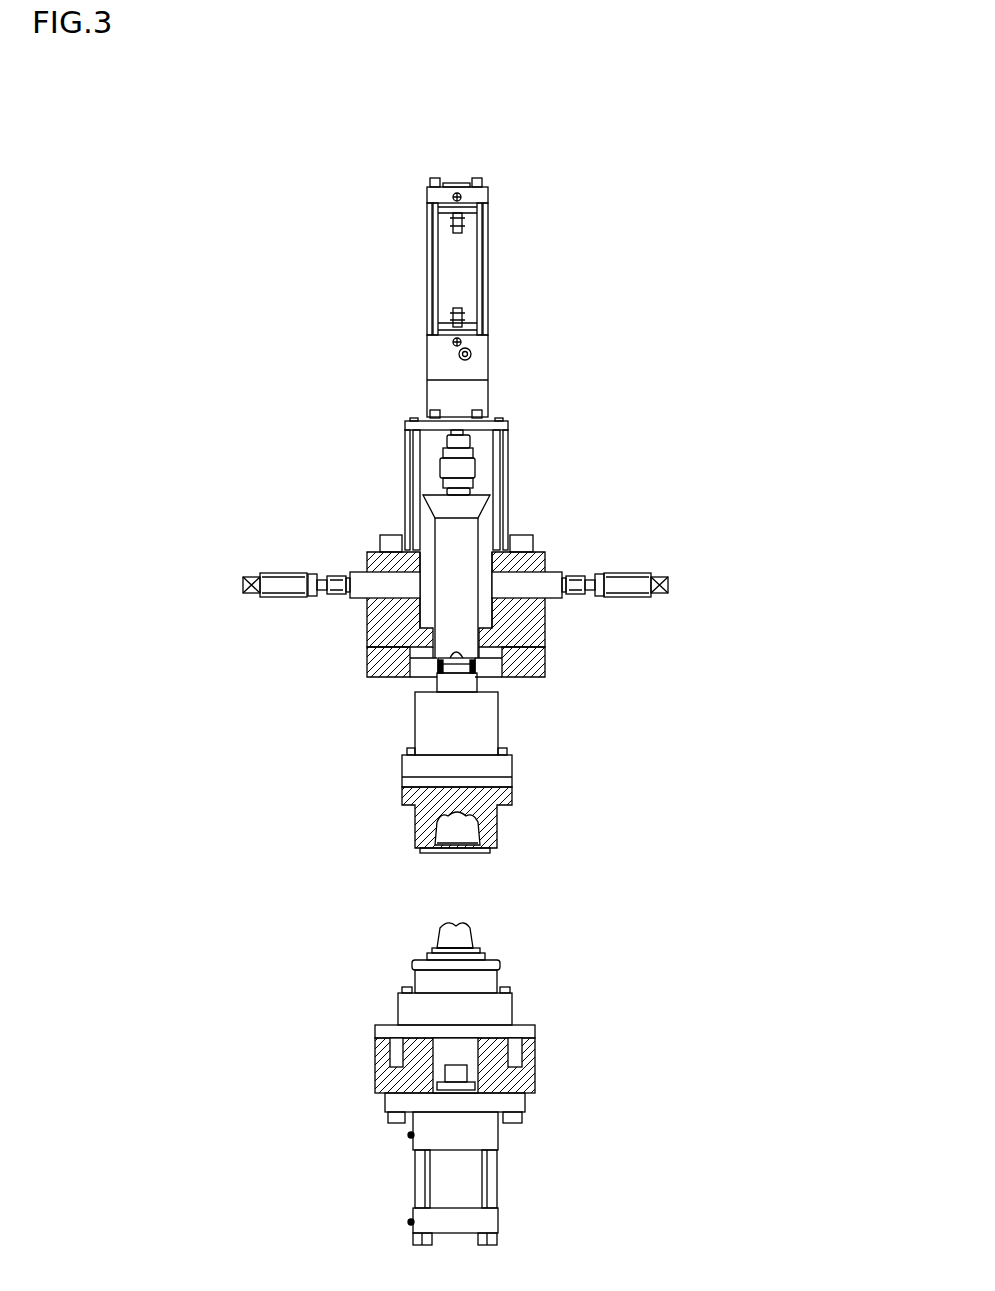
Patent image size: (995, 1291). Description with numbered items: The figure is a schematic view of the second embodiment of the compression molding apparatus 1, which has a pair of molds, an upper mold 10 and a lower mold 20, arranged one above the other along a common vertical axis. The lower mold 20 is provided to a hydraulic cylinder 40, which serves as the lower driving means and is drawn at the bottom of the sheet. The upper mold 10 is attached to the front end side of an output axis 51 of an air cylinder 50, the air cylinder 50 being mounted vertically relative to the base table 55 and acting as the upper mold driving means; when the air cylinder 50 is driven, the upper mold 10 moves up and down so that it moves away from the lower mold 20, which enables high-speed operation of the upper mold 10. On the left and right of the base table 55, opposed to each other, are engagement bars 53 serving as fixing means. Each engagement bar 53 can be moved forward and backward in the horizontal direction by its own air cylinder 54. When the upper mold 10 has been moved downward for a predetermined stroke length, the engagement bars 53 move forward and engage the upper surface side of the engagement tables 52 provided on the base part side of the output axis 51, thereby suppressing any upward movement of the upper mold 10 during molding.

The compression molding apparatus 1 is at (693, 167).
The upper mold 10 is at (483, 817).
The lower mold 20 is at (462, 937).
The hydraulic cylinder 40 is at (452, 1178).
The air cylinder 50 is at (458, 265).
The output axis 51 is at (457, 605).
The engagement table 52 is at (468, 509).
The engagement bar 53 is at (368, 581).
The air cylinder 54 is at (284, 585).
The base table 55 is at (527, 660).